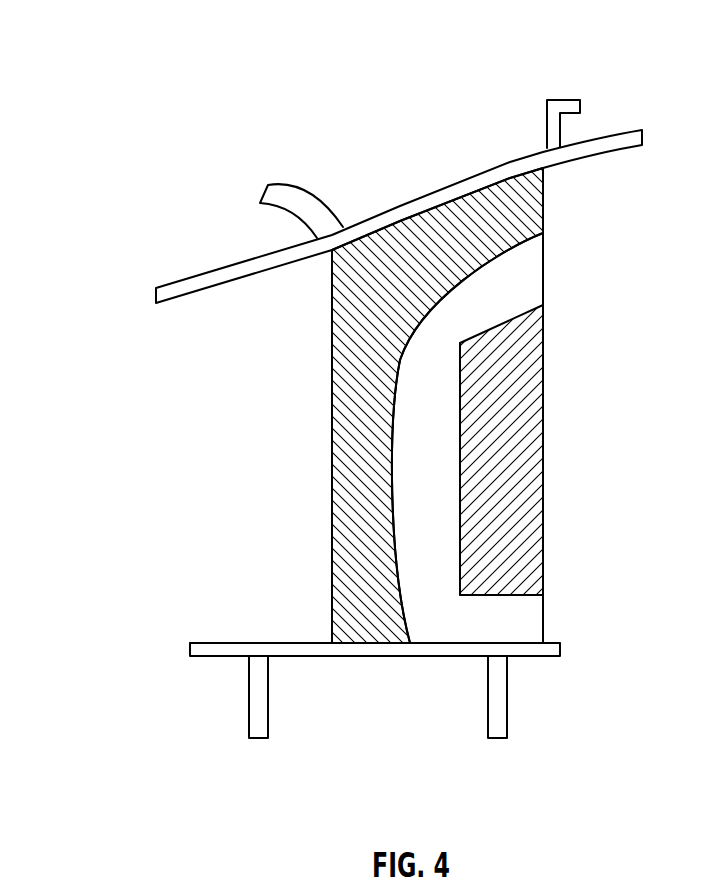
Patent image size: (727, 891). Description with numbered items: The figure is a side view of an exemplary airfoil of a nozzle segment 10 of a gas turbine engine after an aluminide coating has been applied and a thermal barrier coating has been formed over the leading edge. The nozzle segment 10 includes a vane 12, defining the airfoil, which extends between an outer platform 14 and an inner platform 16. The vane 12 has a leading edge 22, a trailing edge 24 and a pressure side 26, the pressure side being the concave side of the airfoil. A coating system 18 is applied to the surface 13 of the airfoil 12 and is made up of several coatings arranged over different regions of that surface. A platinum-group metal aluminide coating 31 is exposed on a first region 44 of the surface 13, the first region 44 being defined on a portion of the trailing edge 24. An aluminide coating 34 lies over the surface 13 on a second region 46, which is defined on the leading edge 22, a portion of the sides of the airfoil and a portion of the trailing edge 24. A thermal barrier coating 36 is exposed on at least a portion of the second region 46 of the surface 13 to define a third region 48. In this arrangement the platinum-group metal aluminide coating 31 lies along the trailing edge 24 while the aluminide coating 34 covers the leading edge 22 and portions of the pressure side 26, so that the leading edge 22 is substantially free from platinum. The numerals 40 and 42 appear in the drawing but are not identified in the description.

The nozzle segment 10 is at (123, 112).
The vane 12 is at (430, 490).
The surface 13 is at (469, 290).
The outer platform 14 is at (192, 284).
The inner platform 16 is at (218, 648).
The coating system 18 is at (349, 410).
The leading edge 22 is at (316, 556).
The trailing edge 24 is at (559, 285).
The pressure side 26 is at (416, 543).
The platinum-group metal aluminide coating 31 is at (492, 402).
The aluminide coating 34 is at (498, 270).
The thermal barrier coating 36 is at (343, 317).
The lower surface of plate 40 is at (234, 294).
The mounting surface 42 is at (240, 628).
The first region 44 is at (512, 536).
The second region 46 is at (425, 338).
The third region 48 is at (351, 455).